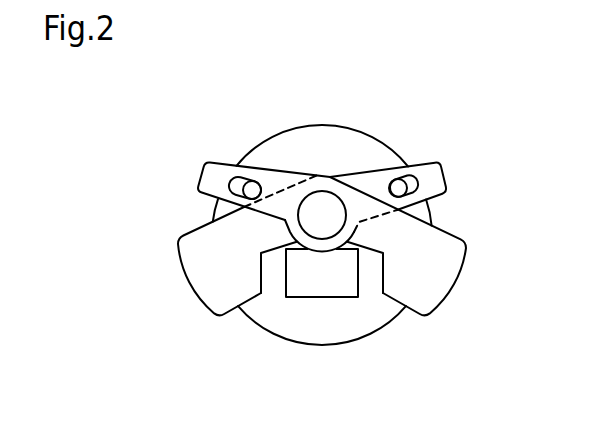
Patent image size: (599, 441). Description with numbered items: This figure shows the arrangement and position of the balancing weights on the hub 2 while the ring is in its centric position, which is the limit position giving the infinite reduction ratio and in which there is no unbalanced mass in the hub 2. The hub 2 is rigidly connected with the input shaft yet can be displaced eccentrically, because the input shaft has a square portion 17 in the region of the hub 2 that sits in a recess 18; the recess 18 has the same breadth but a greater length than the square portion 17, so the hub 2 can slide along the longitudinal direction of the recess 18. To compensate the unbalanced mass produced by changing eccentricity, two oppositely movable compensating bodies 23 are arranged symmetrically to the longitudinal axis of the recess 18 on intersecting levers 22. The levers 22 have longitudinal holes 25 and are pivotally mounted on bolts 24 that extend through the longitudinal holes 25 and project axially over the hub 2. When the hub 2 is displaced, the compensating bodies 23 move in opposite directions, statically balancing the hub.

The hub 2 is at (338, 332).
The square portion 17 is at (289, 254).
The recess 18 is at (305, 277).
The intersecting levers 22 is at (281, 184).
The compensating bodies 23 is at (221, 282).
The bolts 24 is at (252, 189).
The longitudinal holes 25 is at (232, 188).